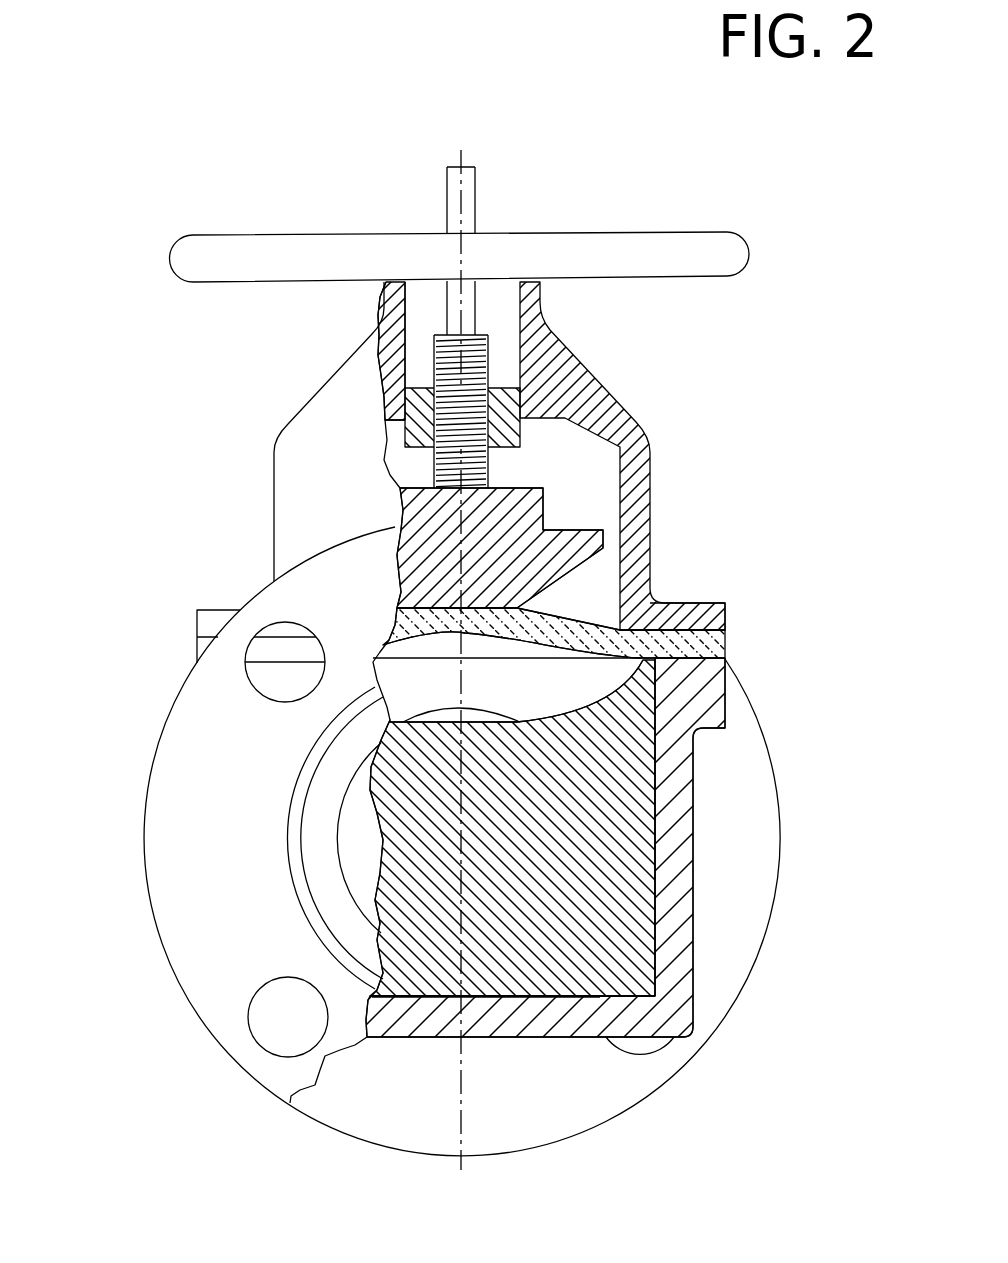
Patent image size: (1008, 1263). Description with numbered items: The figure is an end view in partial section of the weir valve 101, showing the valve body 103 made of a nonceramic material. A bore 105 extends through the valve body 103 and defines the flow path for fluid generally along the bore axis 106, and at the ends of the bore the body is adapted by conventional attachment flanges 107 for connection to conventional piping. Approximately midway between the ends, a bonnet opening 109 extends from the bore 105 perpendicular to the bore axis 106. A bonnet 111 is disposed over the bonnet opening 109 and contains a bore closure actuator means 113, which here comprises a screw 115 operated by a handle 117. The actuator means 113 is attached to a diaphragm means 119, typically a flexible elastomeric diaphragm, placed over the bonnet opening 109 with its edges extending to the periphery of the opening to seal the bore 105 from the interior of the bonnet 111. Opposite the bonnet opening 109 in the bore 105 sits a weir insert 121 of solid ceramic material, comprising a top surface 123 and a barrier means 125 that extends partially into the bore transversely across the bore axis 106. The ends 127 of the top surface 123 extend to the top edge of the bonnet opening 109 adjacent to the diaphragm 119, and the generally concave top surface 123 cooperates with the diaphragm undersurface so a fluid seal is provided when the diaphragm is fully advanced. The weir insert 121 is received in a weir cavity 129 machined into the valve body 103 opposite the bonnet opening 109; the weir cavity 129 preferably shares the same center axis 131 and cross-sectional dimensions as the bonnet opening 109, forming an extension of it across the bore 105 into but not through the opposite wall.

The weir valve 101 is at (780, 632).
The valve body 103 is at (675, 970).
The bore 105 is at (378, 660).
The bore axis 106 is at (462, 838).
The attachment flanges 107 is at (205, 838).
The bonnet opening 109 is at (445, 650).
The bonnet 111 is at (600, 500).
The bore closure actuator means 113 is at (490, 530).
The screw 115 is at (488, 368).
The handle 117 is at (615, 256).
The diaphragm means 119 is at (660, 587).
The weir insert 121 is at (622, 877).
The top surface 123 is at (600, 698).
The barrier means 125 is at (617, 797).
The ends of the top surface 127 is at (657, 660).
The weir cavity 129 is at (505, 997).
The center axis 131 is at (465, 1112).